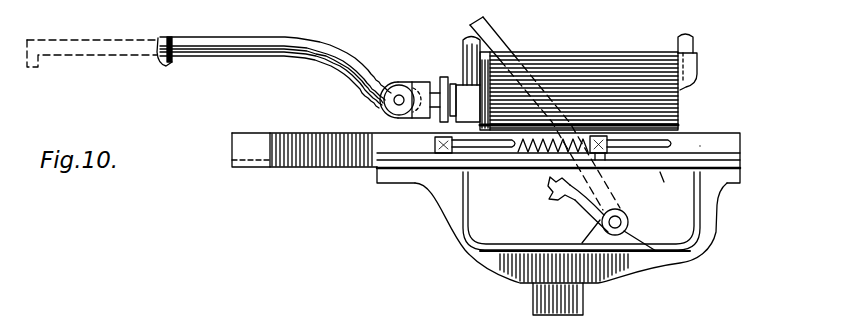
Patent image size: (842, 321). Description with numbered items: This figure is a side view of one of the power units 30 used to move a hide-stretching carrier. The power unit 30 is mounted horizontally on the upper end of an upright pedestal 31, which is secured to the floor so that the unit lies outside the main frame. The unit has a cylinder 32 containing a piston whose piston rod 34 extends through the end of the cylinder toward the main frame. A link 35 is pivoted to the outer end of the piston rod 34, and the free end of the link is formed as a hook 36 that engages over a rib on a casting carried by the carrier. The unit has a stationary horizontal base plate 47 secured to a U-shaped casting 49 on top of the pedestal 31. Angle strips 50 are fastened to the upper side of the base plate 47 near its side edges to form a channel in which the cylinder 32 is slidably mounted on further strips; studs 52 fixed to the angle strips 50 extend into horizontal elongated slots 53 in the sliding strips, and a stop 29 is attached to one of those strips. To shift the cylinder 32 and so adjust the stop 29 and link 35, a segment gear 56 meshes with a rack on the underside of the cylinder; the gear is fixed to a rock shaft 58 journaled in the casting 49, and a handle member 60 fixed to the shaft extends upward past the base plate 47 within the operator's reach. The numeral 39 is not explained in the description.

The stop 29 is at (247, 168).
The power unit 30 is at (692, 117).
The pedestal 31 is at (585, 294).
The cylinder 32 is at (590, 58).
The piston rod 34 is at (432, 82).
The link 35 is at (297, 58).
The hook 36 is at (172, 66).
The link 39 is at (628, 214).
The base plate 47 is at (678, 170).
The U-shaped casting 49 is at (712, 198).
The angle strip 50 is at (730, 148).
The stud 52 is at (440, 156).
The elongated slot 53 is at (471, 149).
The segment gear 56 is at (544, 201).
The rock shaft 58 is at (602, 222).
The handle member 60 is at (499, 55).